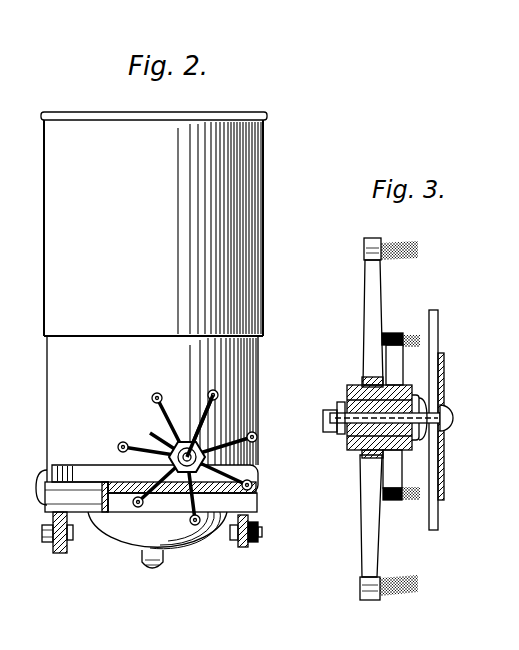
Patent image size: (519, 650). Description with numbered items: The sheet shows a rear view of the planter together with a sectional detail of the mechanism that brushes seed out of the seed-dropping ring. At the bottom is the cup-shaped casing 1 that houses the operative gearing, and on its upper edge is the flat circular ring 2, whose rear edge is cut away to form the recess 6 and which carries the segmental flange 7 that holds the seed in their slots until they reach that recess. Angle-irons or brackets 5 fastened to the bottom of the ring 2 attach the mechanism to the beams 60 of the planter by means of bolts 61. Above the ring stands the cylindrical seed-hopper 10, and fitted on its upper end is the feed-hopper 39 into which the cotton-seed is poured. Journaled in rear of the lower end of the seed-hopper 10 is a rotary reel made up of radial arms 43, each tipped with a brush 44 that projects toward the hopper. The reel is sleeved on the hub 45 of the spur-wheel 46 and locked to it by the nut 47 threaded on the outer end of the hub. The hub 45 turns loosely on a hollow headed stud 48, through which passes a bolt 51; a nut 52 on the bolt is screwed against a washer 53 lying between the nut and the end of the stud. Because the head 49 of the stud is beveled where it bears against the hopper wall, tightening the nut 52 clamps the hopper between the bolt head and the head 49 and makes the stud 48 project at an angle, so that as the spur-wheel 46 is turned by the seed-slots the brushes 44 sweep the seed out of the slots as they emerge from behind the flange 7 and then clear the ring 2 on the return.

In FIG. 2, the casing 1 is at (170, 535).
In FIG. 2, the flat ring 2 is at (55, 500).
In FIG. 2, the angle-irons or brackets 5 is at (68, 548).
In FIG. 2, the recess or cut-away portion 6 is at (127, 505).
In FIG. 2, the segmental flange 7 is at (85, 486).
In FIG. 2, the seed-hopper 10 is at (112, 408).
In FIG. 3, the seed-hopper 10 is at (440, 345).
In FIG. 2, the feed-hopper 39 is at (154, 224).
In FIG. 2, the radial arms of the reel 43 is at (170, 430).
In FIG. 3, the radial arms of the reel 43 is at (365, 306).
In FIG. 3, the brush 44 is at (402, 250).
In FIG. 2, the hub of the spur-wheel 45 is at (208, 430).
In FIG. 3, the hub of the spur-wheel 45 is at (362, 458).
In FIG. 3, the spur-wheel 46 is at (385, 378).
In FIG. 3, the nut 47 is at (347, 390).
In FIG. 3, the hollow headed stud 48 is at (350, 446).
In FIG. 3, the head of the stud 49 is at (440, 460).
In FIG. 3, the bolt 51 is at (420, 420).
In FIG. 3, the nut 52 is at (330, 412).
In FIG. 3, the washer 53 is at (338, 430).
In FIG. 2, the beams of the planter 60 is at (57, 545).
In FIG. 2, the bolts 61 is at (262, 532).